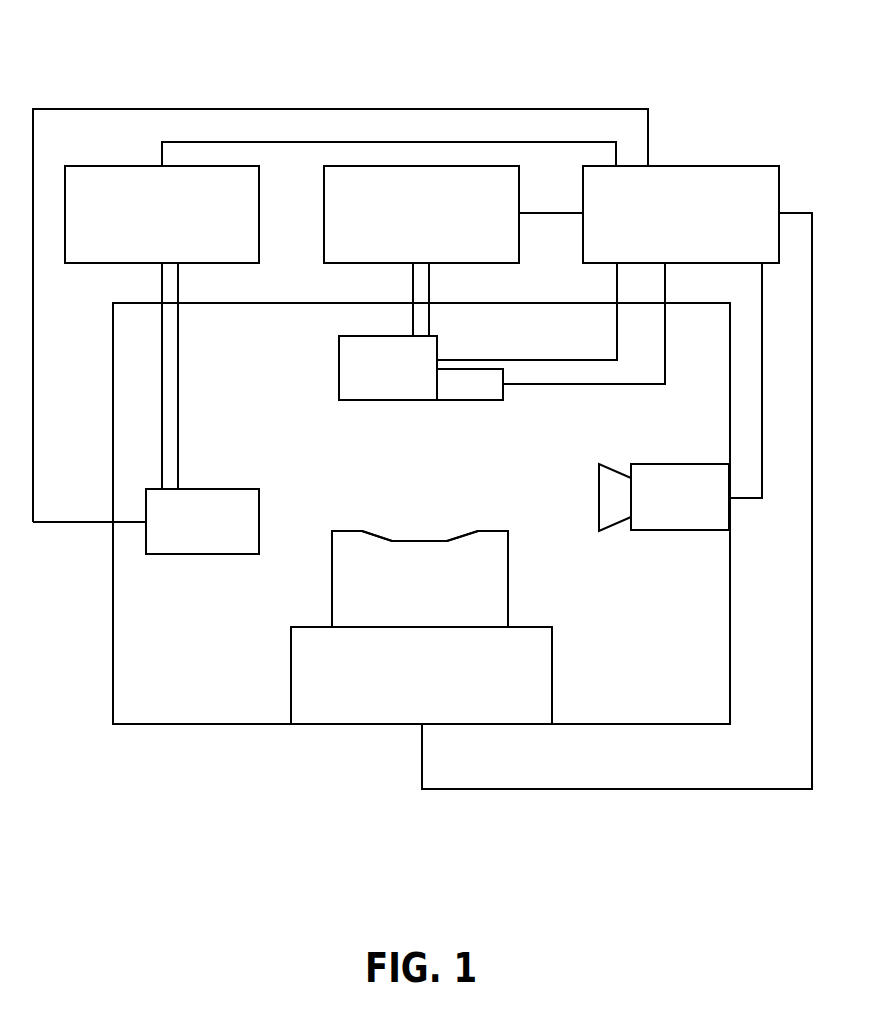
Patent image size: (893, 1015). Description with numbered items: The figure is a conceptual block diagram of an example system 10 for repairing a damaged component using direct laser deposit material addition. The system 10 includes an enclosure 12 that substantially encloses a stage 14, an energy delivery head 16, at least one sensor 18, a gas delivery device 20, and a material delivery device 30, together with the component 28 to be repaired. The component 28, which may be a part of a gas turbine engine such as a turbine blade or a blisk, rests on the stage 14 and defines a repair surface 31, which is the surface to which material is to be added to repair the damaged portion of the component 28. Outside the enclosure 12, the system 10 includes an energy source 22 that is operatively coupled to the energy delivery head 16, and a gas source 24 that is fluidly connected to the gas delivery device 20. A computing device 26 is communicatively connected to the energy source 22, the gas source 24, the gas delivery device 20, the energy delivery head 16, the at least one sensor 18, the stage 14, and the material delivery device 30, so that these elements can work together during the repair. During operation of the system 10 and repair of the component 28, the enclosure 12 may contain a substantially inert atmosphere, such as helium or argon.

The system 10 is at (106, 56).
The enclosure 12 is at (113, 684).
The stage 14 is at (291, 683).
The energy delivery head 16 is at (440, 352).
The sensor 18 is at (722, 514).
The gas delivery device 20 is at (259, 505).
The energy source 22 is at (453, 214).
The gas source 24 is at (162, 214).
The computing device 26 is at (617, 477).
The component 28 is at (332, 610).
The material delivery device 30 is at (503, 392).
The repair surface 31 is at (402, 540).